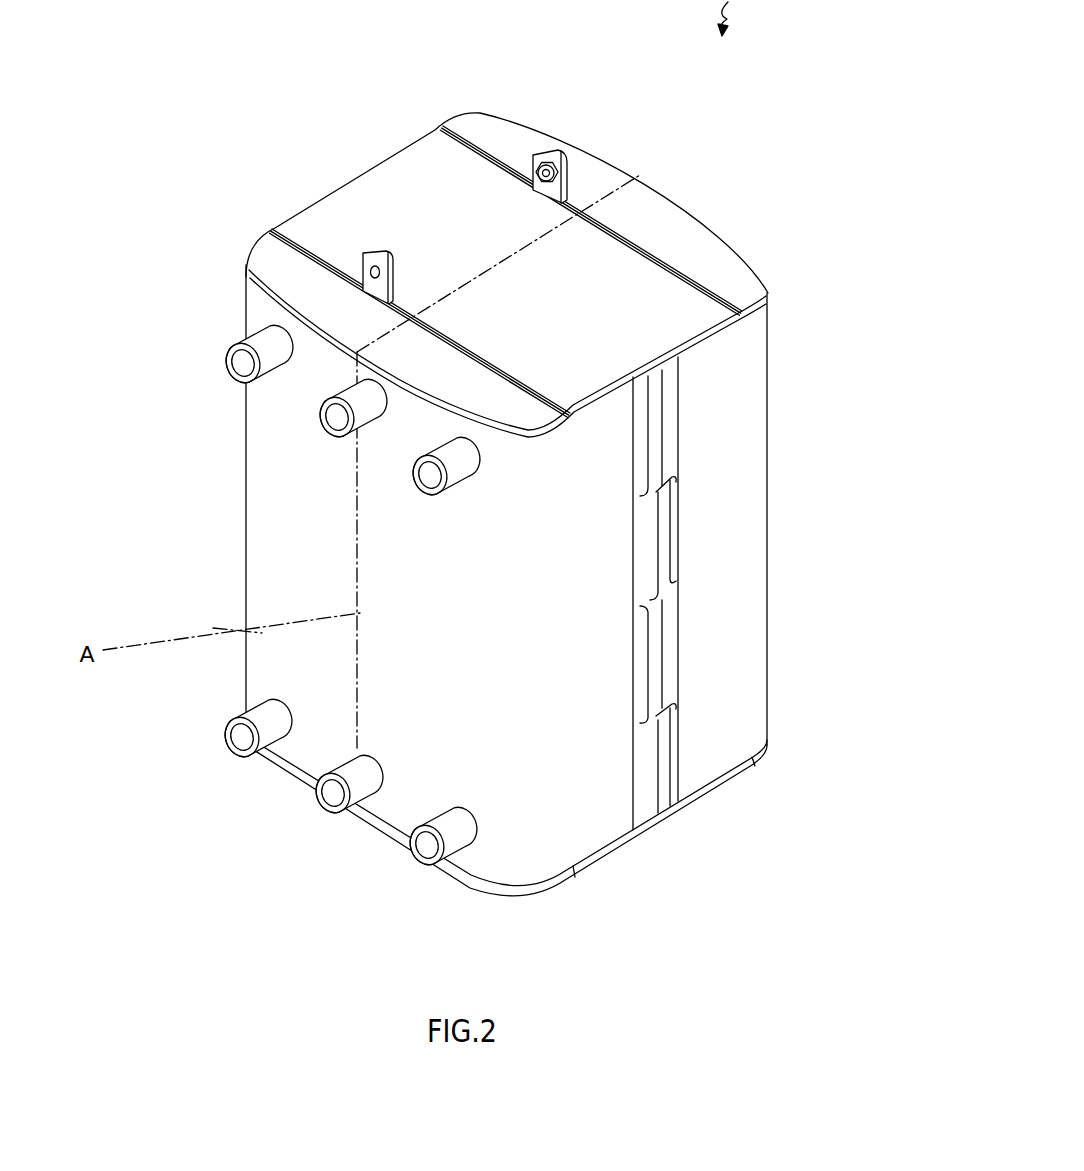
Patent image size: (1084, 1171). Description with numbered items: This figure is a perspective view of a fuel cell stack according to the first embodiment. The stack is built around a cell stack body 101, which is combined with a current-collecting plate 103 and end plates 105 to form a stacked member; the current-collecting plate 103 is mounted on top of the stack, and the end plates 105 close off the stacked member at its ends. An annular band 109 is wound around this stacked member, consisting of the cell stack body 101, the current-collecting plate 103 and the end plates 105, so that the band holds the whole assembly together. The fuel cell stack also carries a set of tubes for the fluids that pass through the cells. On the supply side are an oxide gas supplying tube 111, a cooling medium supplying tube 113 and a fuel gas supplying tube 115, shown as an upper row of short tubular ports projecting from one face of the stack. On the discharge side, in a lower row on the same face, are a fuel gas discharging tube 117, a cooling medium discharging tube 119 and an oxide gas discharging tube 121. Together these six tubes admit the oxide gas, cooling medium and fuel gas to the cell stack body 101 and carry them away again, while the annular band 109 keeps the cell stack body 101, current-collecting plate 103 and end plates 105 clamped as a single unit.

The cell stack body 101 is at (653, 343).
The current-collecting plate 103 is at (388, 262).
The end plates 105 is at (853, 97).
The annular band 109 is at (723, 517).
The oxide gas supplying tube 111 is at (237, 380).
The cooling medium supplying tube 113 is at (327, 417).
The fuel gas supplying tube 115 is at (415, 479).
The fuel gas discharging tube 117 is at (237, 733).
The cooling medium discharging tube 119 is at (333, 790).
The oxide gas discharging tube 121 is at (423, 847).